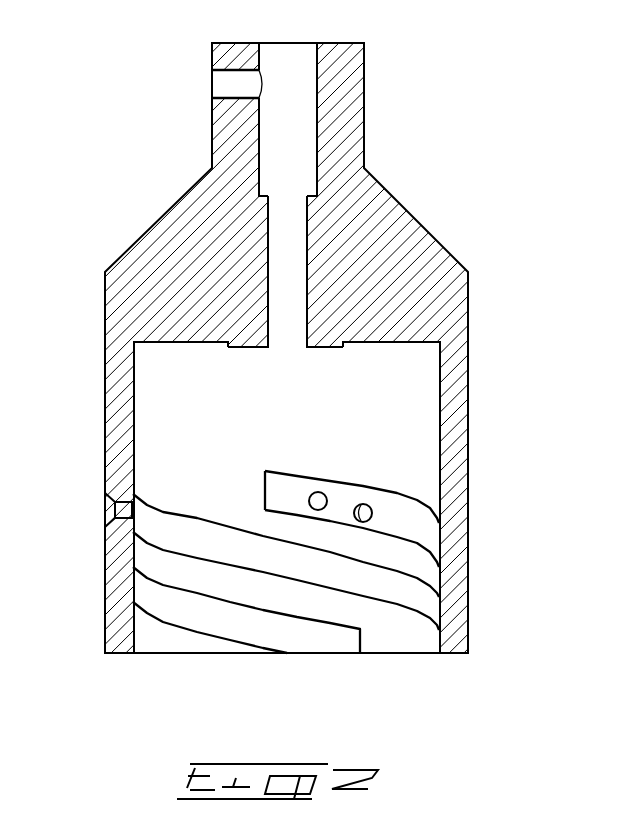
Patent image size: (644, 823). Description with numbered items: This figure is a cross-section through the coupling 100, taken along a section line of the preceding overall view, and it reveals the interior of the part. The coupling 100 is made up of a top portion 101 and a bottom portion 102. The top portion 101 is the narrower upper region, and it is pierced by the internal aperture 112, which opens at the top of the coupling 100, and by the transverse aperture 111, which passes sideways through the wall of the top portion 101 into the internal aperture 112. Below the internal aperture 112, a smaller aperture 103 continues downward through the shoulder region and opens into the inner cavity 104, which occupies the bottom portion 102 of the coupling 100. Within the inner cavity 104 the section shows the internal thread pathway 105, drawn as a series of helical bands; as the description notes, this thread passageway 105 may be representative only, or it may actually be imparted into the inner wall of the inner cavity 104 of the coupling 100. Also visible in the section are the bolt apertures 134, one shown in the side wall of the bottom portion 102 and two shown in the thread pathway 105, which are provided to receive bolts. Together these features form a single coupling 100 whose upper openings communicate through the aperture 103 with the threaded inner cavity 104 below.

The coupling 100 is at (538, 136).
The top portion 101 is at (360, 92).
The bottom portion 102 is at (460, 632).
The aperture 103 is at (285, 252).
The inner cavity 104 is at (300, 425).
The internal thread pathway 105 is at (272, 498).
The transverse aperture 111 is at (235, 78).
The internal aperture 112 is at (310, 131).
The bolt apertures 134 is at (365, 503).